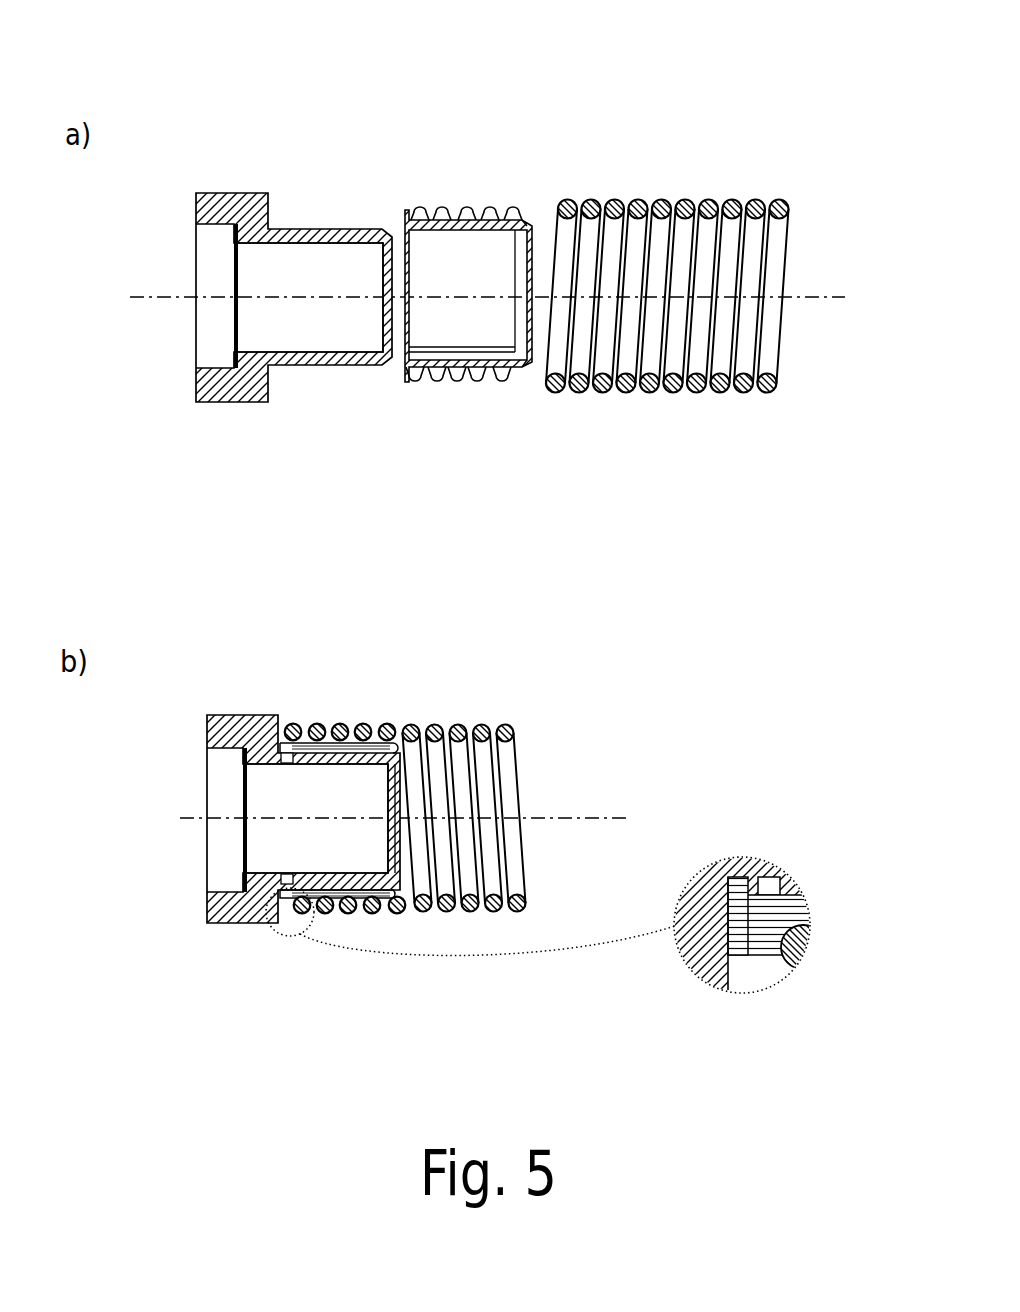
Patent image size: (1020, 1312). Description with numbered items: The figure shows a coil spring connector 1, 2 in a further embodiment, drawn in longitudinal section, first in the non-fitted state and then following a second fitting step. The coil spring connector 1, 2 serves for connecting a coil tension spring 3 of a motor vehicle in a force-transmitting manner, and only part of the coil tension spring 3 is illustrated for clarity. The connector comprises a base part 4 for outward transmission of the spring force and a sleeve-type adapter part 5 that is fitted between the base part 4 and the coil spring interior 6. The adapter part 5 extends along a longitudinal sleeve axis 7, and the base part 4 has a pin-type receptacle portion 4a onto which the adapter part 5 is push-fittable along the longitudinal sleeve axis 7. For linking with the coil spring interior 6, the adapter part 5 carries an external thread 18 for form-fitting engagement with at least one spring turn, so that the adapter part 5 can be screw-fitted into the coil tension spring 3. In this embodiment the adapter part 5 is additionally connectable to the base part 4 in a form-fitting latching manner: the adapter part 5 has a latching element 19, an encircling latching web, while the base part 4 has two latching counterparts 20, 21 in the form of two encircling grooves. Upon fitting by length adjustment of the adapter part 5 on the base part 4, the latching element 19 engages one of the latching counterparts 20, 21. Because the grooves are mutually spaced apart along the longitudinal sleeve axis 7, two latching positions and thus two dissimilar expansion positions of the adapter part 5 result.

The coil spring connector 1 is at (382, 143).
The coil spring connector 2 is at (213, 672).
The coil tension spring 3 is at (685, 203).
The base part 4 is at (243, 420).
The pin-type receptacle portion 4a is at (337, 325).
The sleeve-type adapter part 5 is at (523, 155).
The coil spring interior 6 is at (613, 227).
The longitudinal sleeve axis 7 is at (812, 297).
The external thread 18 is at (485, 212).
The latching element 19 is at (737, 887).
The latching counterpart 20 is at (730, 872).
The latching counterpart 21 is at (775, 875).